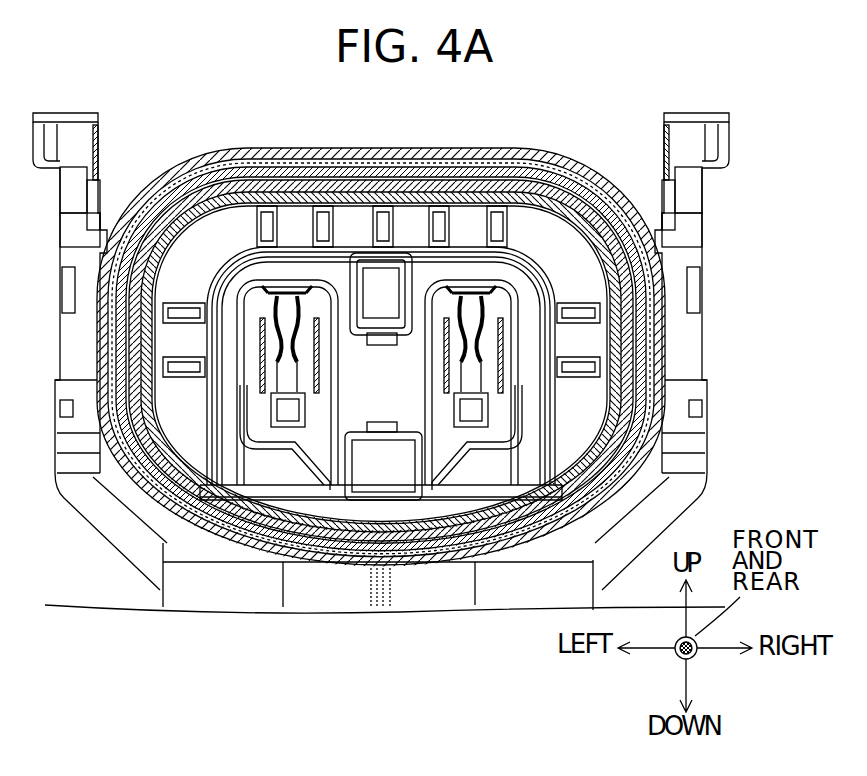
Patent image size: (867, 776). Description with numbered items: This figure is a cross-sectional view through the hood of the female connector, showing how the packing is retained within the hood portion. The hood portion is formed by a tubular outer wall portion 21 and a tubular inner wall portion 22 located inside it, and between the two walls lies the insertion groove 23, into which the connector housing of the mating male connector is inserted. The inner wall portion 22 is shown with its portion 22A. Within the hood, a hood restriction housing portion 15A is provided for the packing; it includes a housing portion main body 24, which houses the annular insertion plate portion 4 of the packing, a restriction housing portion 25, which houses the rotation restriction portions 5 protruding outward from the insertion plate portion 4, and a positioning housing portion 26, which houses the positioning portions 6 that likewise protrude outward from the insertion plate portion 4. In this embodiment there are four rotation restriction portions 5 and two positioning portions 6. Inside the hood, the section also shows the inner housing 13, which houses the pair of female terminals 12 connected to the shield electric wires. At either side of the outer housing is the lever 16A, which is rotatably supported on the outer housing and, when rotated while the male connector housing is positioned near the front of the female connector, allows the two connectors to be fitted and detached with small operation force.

The insertion plate portion 4 is at (377, 187).
The rotation restriction portion 5 is at (381, 385).
The positioning portion 6 is at (130, 327).
The female terminal 12 is at (290, 420).
The inner housing 13 is at (197, 560).
The hood restriction housing portion 15A is at (410, 340).
The lever 16A is at (686, 226).
The outer wall portion 21 is at (496, 157).
The inner wall portion 22 is at (382, 321).
The inner wall portion 22A is at (555, 180).
The insertion groove 23 is at (523, 173).
The housing portion main body 24 is at (578, 195).
The restriction housing portion 25 is at (302, 177).
The positioning housing portion 26 is at (123, 375).